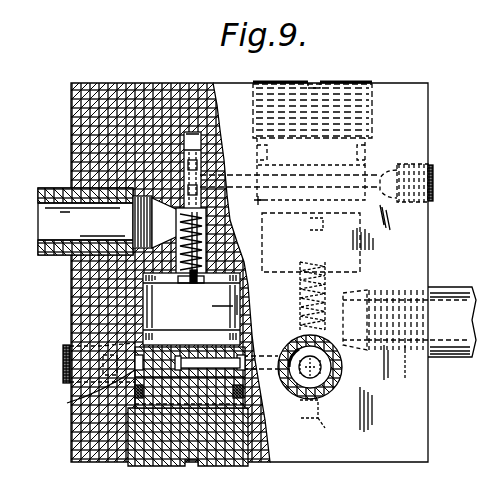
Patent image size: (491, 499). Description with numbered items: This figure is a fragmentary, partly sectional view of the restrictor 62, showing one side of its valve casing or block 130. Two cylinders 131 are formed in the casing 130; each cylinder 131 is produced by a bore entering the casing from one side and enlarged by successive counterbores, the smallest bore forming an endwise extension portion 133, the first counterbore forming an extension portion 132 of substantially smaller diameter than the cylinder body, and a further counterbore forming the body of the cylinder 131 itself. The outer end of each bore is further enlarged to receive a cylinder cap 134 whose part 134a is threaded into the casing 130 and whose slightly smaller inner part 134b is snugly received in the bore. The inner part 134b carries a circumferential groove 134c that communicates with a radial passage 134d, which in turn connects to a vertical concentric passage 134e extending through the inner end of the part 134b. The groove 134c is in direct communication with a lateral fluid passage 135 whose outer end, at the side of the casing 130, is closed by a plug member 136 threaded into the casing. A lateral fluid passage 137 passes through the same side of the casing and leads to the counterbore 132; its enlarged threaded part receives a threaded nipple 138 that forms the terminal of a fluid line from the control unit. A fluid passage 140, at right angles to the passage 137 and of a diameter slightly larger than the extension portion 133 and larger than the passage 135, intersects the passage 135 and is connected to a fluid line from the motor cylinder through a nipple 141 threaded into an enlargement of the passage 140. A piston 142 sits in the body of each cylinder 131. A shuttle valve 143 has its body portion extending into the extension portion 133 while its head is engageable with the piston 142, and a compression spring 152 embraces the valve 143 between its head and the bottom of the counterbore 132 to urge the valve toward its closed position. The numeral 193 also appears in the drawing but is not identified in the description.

The restrictor 62 is at (437, 96).
The valve casing or block 130 is at (415, 133).
The cylinder 131 is at (380, 267).
The cylinder extension portion 132 is at (233, 225).
The endwise extension portion 133 is at (332, 430).
The cylinder cap 134 is at (332, 81).
The threaded part of cylinder cap 134a is at (208, 466).
The inner part of cylinder cap 134b is at (222, 397).
The circumferential groove 134c is at (84, 393).
The radial passage 134d is at (235, 350).
The vertical concentric passage 134e is at (190, 306).
The lateral fluid passage 135 is at (295, 347).
The plug member 136 is at (433, 182).
The lateral fluid passage 137 is at (170, 229).
The threaded nipple 138 is at (108, 256).
The fluid passage 140 is at (203, 178).
The nipple 141 is at (329, 407).
The piston 142 is at (316, 216).
The shuttle valve 143 is at (178, 203).
The compression spring 152 is at (190, 306).
The valve head 193 is at (200, 140).